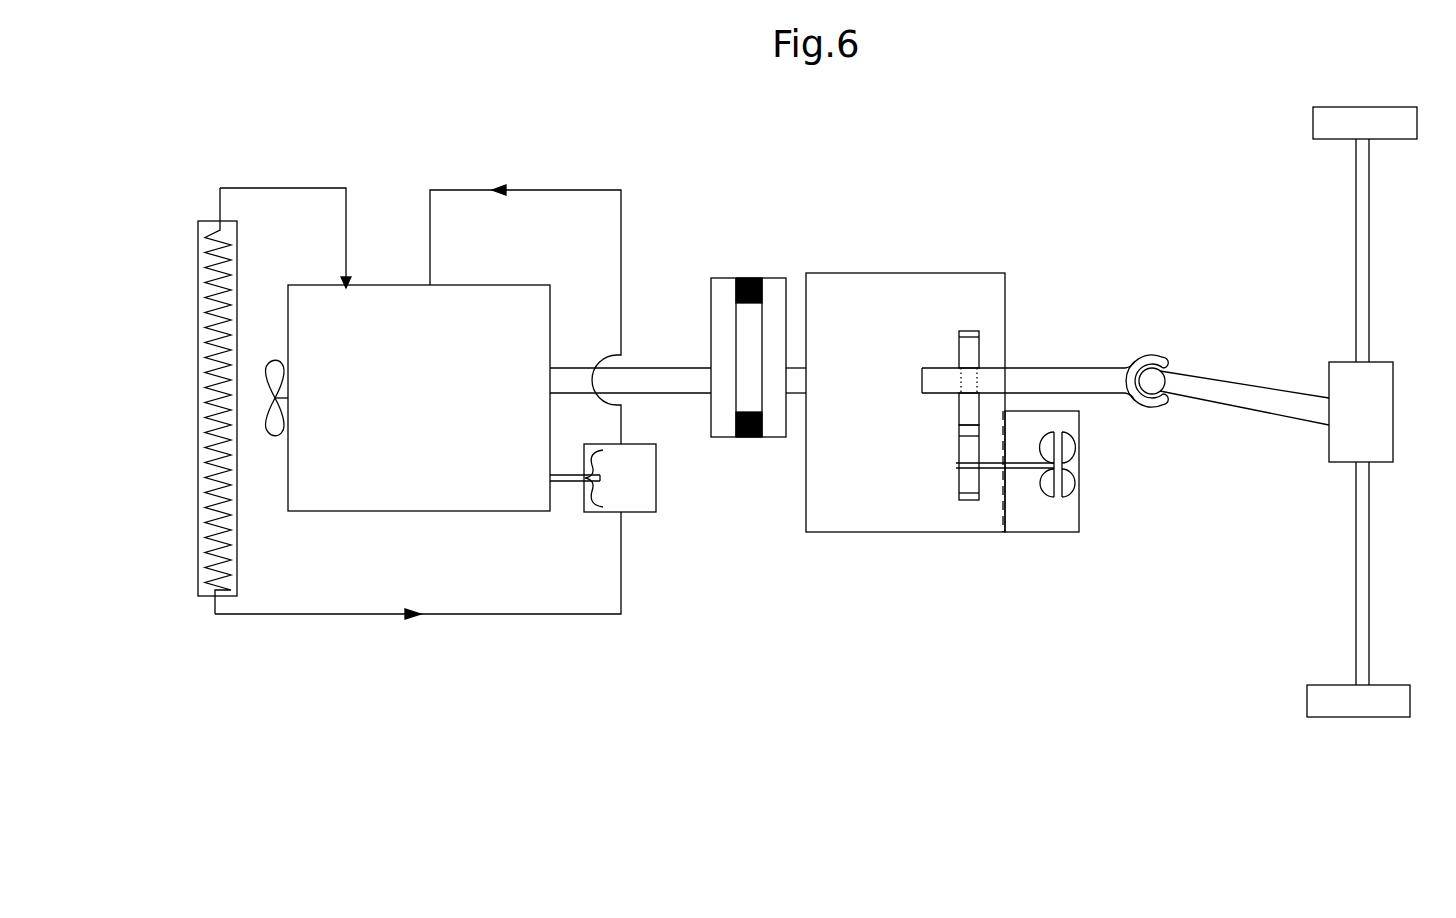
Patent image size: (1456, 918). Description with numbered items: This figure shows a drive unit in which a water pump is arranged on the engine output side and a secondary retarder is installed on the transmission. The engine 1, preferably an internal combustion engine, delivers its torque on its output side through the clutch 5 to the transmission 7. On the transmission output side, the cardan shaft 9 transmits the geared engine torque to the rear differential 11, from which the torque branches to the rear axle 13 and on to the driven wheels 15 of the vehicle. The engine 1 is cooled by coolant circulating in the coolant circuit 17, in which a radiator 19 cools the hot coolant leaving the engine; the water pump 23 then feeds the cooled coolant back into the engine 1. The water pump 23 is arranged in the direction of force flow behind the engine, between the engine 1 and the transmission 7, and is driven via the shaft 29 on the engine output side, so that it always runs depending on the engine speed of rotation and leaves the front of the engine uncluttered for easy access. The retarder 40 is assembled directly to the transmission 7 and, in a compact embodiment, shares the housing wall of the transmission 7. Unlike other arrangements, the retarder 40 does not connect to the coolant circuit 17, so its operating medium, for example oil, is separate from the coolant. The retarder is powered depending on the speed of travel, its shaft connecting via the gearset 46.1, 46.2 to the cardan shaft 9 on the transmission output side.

The engine 1 is at (393, 502).
The clutch 5 is at (738, 278).
The transmission 7 is at (902, 288).
The cardan shaft 9 is at (1072, 382).
The rear differential 11 is at (1366, 428).
The rear axle 13 is at (1360, 552).
The driven wheels 15 is at (1367, 702).
The coolant circuit 17 is at (572, 190).
The radiator 19 is at (205, 510).
The water pump 23 is at (632, 498).
The shaft 29 is at (572, 480).
The retarder 40 is at (1029, 515).
The gearset gear 46.1 is at (965, 452).
The gearset gear 46.2 is at (968, 405).